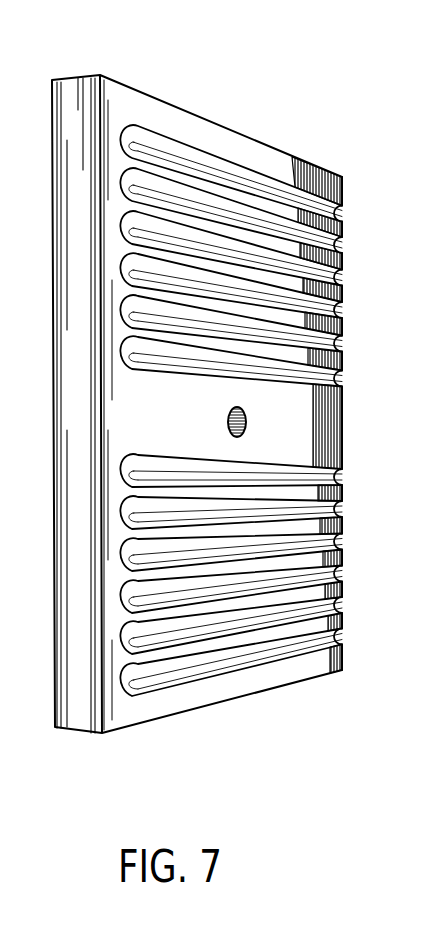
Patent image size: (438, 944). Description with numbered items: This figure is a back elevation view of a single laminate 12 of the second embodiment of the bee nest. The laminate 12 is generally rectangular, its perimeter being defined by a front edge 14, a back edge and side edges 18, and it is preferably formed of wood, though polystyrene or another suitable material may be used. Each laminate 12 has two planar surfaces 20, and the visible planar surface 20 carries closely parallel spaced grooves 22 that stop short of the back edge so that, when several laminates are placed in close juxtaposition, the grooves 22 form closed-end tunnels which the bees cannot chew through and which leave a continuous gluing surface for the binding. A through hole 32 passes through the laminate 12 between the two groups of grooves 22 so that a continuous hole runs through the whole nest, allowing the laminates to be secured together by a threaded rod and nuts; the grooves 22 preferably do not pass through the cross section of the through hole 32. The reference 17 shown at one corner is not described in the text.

The laminate 12 is at (293, 675).
The front edge 14 is at (341, 621).
The side surface 17 is at (88, 74).
The side edges 18 is at (290, 152).
The planar surfaces 20 is at (343, 493).
The grooves 22 is at (333, 280).
The through hole 32 is at (247, 427).